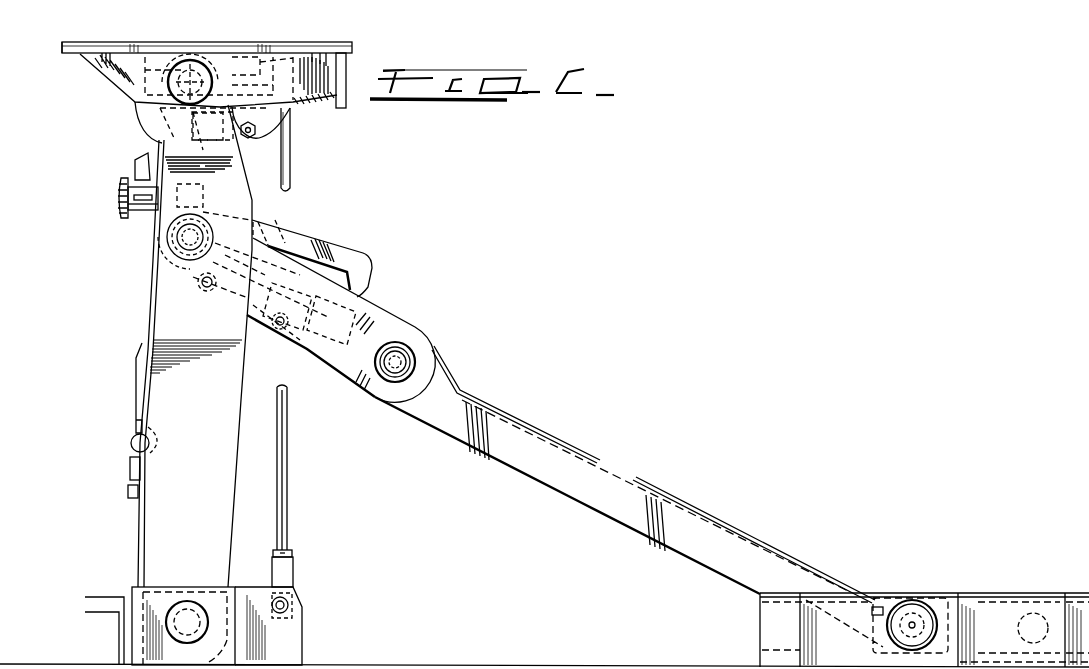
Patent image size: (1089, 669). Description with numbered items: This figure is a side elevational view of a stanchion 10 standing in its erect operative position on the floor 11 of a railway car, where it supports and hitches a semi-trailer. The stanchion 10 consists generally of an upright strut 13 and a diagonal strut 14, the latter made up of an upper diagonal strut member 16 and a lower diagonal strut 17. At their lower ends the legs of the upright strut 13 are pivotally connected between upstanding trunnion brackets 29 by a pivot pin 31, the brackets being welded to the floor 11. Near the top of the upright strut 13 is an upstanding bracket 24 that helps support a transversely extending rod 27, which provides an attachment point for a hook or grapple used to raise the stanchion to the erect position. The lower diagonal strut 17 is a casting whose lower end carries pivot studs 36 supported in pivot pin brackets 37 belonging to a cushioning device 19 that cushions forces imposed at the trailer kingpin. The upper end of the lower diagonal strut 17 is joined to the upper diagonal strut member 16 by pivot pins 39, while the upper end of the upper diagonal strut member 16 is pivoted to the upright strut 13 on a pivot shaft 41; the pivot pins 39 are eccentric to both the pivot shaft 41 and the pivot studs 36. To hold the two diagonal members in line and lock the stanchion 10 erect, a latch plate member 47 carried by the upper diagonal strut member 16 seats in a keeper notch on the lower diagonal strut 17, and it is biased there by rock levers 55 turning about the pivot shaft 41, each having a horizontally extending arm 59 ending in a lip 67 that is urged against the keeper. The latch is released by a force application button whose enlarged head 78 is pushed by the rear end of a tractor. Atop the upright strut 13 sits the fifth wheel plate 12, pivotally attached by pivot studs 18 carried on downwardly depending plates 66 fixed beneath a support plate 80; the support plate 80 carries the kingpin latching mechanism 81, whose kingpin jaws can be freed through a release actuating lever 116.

The stanchion 10 is at (427, 308).
The floor 11 is at (628, 662).
The fifth wheel plate 12 is at (355, 42).
The upright strut 13 is at (137, 292).
The diagonal strut 14 is at (575, 440).
The upper diagonal strut member 16 is at (334, 380).
The lower diagonal strut 17 is at (635, 545).
The pivot studs 18 is at (190, 82).
The cushioning device 19 is at (1078, 593).
The upstanding bracket 24 is at (131, 476).
The bar or rod 27 is at (132, 445).
The trunnion brackets 29 is at (231, 596).
The pivot pin 31 is at (184, 624).
The pivot studs 36 is at (914, 623).
The pivot pin brackets 37 is at (988, 592).
The pivot pins 39 is at (402, 362).
The pivot shaft 41 is at (186, 238).
The latch plate member 47 is at (278, 476).
The rock levers 55 is at (256, 220).
The horizontally extending arm 59 is at (338, 250).
The downwardly depending plates 66 is at (95, 68).
The lip 67 is at (355, 286).
The enlarged head 78 is at (118, 190).
The support plate 80 is at (70, 42).
The kingpin latching mechanism 81 is at (300, 110).
The release actuating lever 116 is at (152, 130).